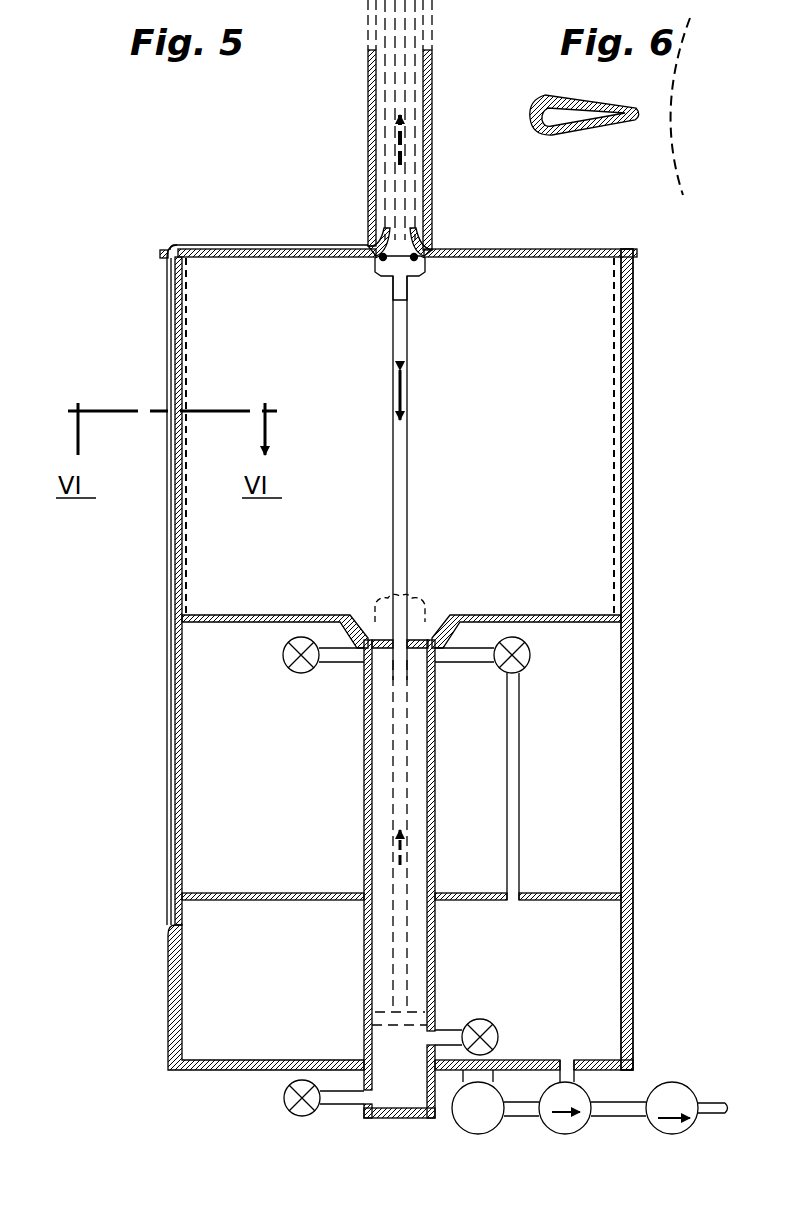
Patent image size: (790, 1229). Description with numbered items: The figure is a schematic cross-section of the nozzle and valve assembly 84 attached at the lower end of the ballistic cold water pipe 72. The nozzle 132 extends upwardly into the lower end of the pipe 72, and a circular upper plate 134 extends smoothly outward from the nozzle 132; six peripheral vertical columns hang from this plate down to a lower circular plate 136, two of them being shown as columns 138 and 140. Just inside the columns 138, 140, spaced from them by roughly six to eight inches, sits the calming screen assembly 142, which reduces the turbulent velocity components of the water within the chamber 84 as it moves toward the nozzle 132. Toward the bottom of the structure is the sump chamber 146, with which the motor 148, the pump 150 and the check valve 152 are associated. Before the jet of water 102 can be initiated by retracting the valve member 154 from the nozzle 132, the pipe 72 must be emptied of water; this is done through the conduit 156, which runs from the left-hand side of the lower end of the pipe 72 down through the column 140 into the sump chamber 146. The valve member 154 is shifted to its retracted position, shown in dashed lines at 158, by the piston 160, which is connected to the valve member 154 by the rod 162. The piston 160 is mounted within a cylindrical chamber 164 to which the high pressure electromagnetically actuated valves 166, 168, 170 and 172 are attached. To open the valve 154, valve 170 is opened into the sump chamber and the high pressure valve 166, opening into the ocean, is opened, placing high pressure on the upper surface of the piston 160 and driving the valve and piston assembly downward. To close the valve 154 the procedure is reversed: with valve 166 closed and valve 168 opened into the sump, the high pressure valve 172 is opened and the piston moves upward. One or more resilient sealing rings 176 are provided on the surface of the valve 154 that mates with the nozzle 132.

In FIG. 5, the pipe 72 is at (368, 96).
In FIG. 5, the jet of water 102 is at (398, 176).
In FIG. 5, the nozzle 132 is at (418, 232).
In FIG. 5, the circular upper plate 134 is at (572, 250).
In FIG. 5, the lower circular plate 136 is at (537, 614).
In FIG. 5, the column 138 is at (632, 492).
In FIG. 5, the column 140 is at (166, 330).
In FIG. 6, the column 140 is at (578, 132).
In FIG. 5, the calming screen assembly 142 is at (188, 535).
In FIG. 6, the calming screen assembly 142 is at (665, 152).
In FIG. 5, the sump chamber 146 is at (290, 976).
In FIG. 5, the motor 148 is at (463, 1118).
In FIG. 5, the pump 150 is at (554, 1116).
In FIG. 5, the check valve 152 is at (690, 1124).
In FIG. 5, the valve member 154 is at (418, 268).
In FIG. 5, the conduit 156 is at (265, 248).
In FIG. 5, the retracted position of valve 158 is at (380, 612).
In FIG. 5, the piston 160 is at (366, 688).
In FIG. 5, the rod 162 is at (402, 492).
In FIG. 5, the cylindrical chamber 164 is at (362, 788).
In FIG. 5, the high pressure valve 166 is at (288, 661).
In FIG. 5, the valve 168 is at (526, 662).
In FIG. 5, the valve 170 is at (492, 1022).
In FIG. 5, the high pressure valve 172 is at (286, 1099).
In FIG. 5, the resilient sealing rings 176 is at (378, 262).
In FIG. 5, the nozzle and valve assembly 84 is at (644, 420).